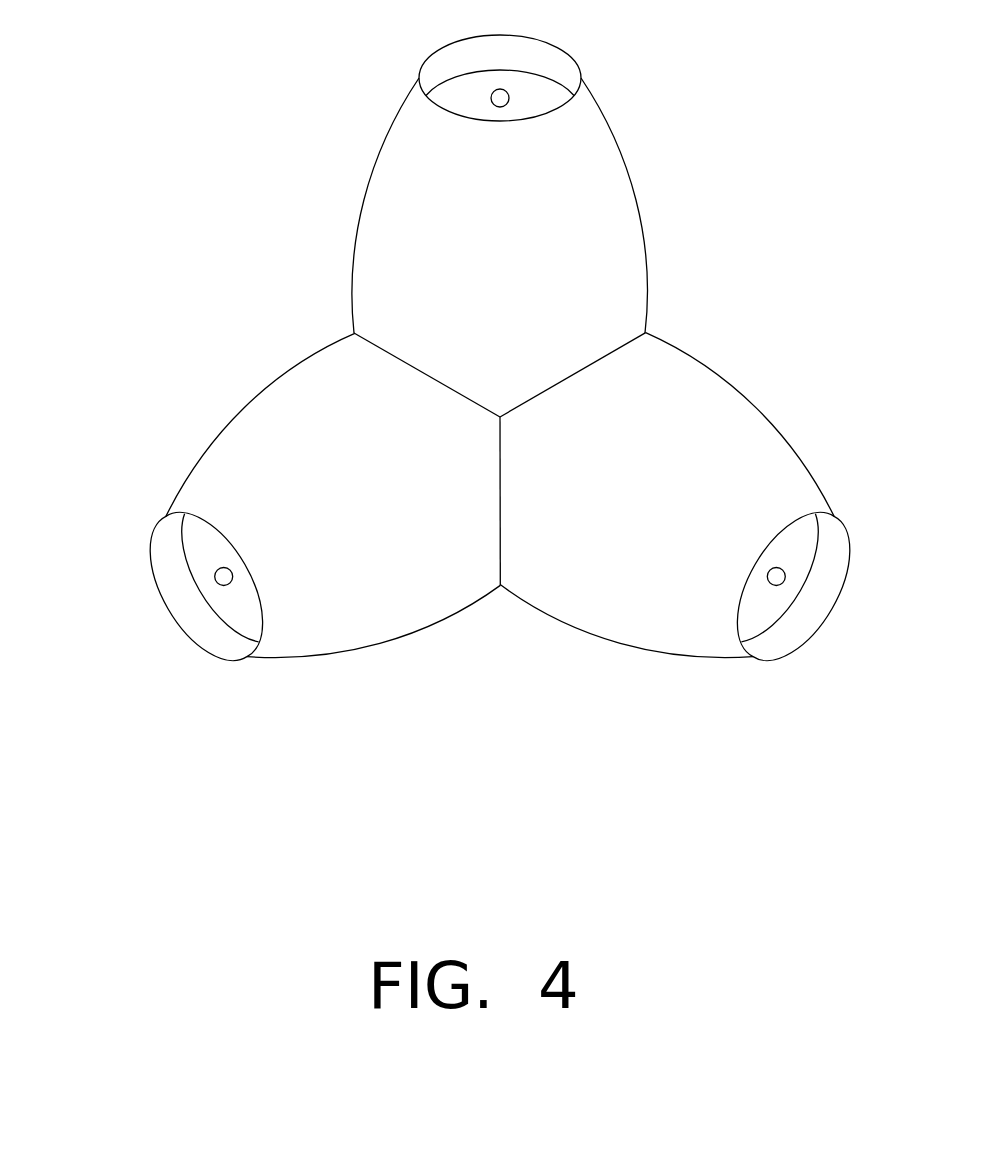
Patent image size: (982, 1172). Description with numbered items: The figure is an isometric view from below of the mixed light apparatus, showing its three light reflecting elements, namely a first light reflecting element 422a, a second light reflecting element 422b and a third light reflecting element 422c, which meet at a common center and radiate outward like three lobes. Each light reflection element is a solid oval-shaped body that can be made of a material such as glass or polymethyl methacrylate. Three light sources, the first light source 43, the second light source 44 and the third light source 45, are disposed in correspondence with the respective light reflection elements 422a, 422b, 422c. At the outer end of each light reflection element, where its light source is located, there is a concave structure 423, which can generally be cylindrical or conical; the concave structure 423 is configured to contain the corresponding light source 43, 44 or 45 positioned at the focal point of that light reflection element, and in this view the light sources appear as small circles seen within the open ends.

The first light reflecting element 422a is at (260, 370).
The second light reflecting element 422b is at (378, 98).
The third light reflecting element 422c is at (712, 353).
The concave structure 423 is at (204, 588).
The first light source 43 is at (216, 570).
The second light source 44 is at (504, 101).
The third light source 45 is at (776, 586).